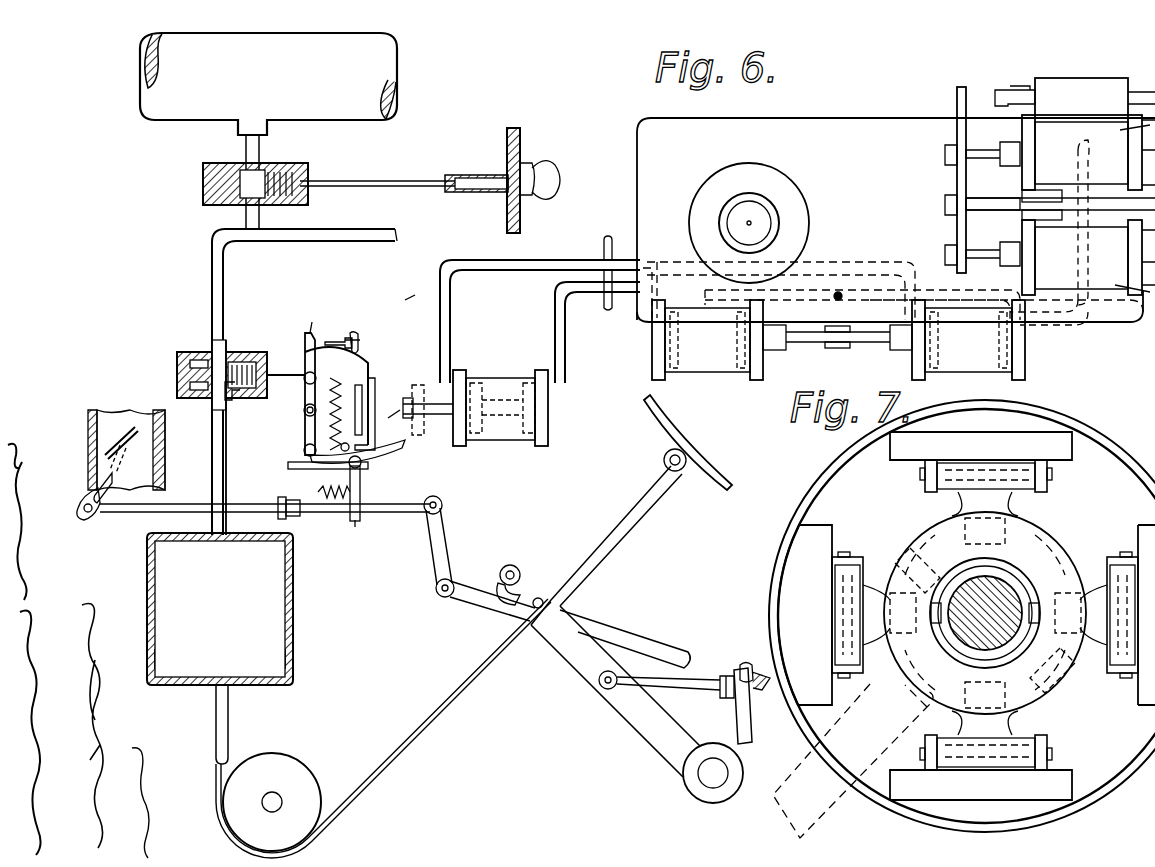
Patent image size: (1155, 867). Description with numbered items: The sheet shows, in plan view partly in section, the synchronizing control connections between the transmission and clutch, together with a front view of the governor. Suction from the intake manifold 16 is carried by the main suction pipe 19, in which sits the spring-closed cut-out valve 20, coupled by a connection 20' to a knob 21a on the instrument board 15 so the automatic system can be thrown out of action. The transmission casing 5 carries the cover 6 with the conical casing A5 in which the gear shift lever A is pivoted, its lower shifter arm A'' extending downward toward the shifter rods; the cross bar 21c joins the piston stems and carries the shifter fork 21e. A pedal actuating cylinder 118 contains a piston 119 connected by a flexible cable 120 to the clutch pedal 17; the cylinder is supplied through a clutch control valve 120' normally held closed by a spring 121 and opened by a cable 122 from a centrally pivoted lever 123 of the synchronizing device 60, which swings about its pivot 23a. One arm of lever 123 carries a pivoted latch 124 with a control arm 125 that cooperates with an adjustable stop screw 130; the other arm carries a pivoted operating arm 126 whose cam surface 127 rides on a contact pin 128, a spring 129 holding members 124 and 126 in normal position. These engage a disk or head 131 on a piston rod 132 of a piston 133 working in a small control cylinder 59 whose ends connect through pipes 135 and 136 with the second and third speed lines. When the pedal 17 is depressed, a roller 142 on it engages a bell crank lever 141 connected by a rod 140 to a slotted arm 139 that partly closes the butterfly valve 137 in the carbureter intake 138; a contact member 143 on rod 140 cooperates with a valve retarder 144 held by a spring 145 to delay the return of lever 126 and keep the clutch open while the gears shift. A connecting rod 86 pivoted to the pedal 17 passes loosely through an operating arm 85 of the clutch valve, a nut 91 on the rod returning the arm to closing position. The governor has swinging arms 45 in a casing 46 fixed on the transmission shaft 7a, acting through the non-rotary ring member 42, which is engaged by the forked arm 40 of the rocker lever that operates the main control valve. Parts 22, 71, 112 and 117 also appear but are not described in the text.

In FIG. 6, the intake manifold 16 is at (195, 122).
In FIG. 6, the cut-out valve 20 is at (235, 182).
In FIG. 6, the connection 20' is at (404, 172).
In FIG. 6, the main suction pipe 19 is at (372, 230).
In FIG. 6, the instrument board 15 is at (512, 142).
In FIG. 6, the button or knob 21a is at (560, 170).
In FIG. 6, the pipe 135 is at (566, 262).
In FIG. 6, the pipe 136 is at (562, 358).
In FIG. 6, the control cylinder 59 is at (503, 440).
In FIG. 6, the piston 133 is at (518, 362).
In FIG. 6, the piston rod 132 is at (432, 414).
In FIG. 6, the cam surface 127 is at (403, 448).
In FIG. 6, the synchronizing device 60 is at (412, 299).
In FIG. 6, the clutch control valve 120' is at (217, 367).
In FIG. 6, the spring 121 is at (250, 352).
In FIG. 6, the cable 122 is at (284, 378).
In FIG. 6, the lever 123 is at (305, 428).
In FIG. 6, the control arm 125 is at (319, 316).
In FIG. 6, the pivot 23a is at (300, 412).
In FIG. 6, the latch 124 is at (358, 360).
In FIG. 6, the stop pin or screw 130 is at (340, 330).
In FIG. 6, the spring 129 is at (340, 400).
In FIG. 6, the disk or head 131 is at (362, 418).
In FIG. 6, the operating arm 126 is at (372, 460).
In FIG. 6, the contact pin 128 is at (362, 470).
In FIG. 6, the valve retarder 144 is at (360, 510).
In FIG. 6, the spring 145 is at (320, 485).
In FIG. 6, the contact member 143 is at (282, 495).
In FIG. 6, the rod 140 is at (330, 513).
In FIG. 6, the carbureter intake 138 is at (88, 430).
In FIG. 6, the butterfly valve 137 is at (122, 445).
In FIG. 6, the slotted arm 139 is at (92, 522).
In FIG. 6, the piston 119 is at (212, 450).
In FIG. 6, the pedal actuating cylinder 118 is at (293, 590).
In FIG. 6, the flexible cable 120 is at (383, 728).
In FIG. 6, the bell crank lever 141 is at (445, 543).
In FIG. 6, the roller 142 is at (520, 557).
In FIG. 6, the clutch pedal 17 is at (620, 520).
In FIG. 6, the connecting rod 86 is at (700, 692).
In FIG. 6, the nut or abutment 91 is at (733, 672).
In FIG. 6, the operating arm 85 is at (752, 720).
In FIG. 6, the transmission casing 5 is at (836, 118).
In FIG. 6, the gear shift lever A is at (749, 216).
In FIG. 6, the conical casing A5 is at (690, 232).
In FIG. 6, the lower shifter arm A'' is at (786, 223).
In FIG. 6, the cover 6 is at (805, 196).
In FIG. 6, the solenoid 22 is at (720, 360).
In FIG. 6, the shifter fork or arm 21e is at (838, 350).
In FIG. 6, the plate 117 is at (957, 96).
In FIG. 6, the cross bar 21c is at (957, 200).
In FIG. 6, the block 71 is at (1080, 78).
In FIG. 6, the terminal 112 is at (1005, 95).
In FIG. 7, the governor casing 46 is at (824, 480).
In FIG. 7, the non-rotary ring member 42 is at (1030, 530).
In FIG. 7, the transmission shaft 7a is at (1000, 590).
In FIG. 7, the governor arms 45 is at (905, 453).
In FIG. 7, the forked arm 40 is at (868, 685).